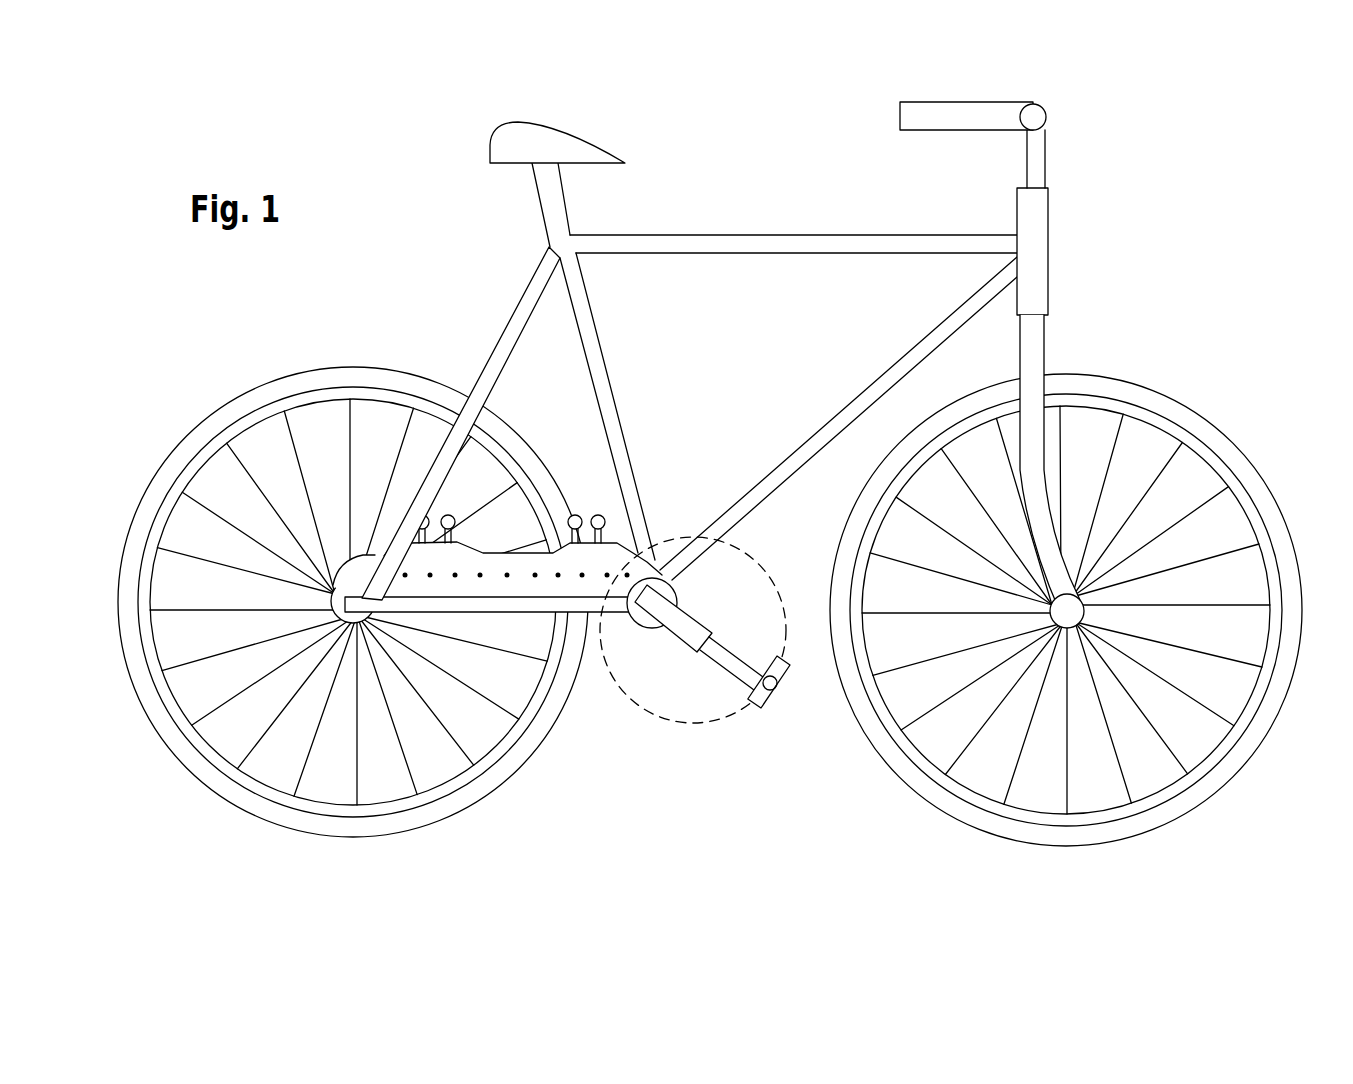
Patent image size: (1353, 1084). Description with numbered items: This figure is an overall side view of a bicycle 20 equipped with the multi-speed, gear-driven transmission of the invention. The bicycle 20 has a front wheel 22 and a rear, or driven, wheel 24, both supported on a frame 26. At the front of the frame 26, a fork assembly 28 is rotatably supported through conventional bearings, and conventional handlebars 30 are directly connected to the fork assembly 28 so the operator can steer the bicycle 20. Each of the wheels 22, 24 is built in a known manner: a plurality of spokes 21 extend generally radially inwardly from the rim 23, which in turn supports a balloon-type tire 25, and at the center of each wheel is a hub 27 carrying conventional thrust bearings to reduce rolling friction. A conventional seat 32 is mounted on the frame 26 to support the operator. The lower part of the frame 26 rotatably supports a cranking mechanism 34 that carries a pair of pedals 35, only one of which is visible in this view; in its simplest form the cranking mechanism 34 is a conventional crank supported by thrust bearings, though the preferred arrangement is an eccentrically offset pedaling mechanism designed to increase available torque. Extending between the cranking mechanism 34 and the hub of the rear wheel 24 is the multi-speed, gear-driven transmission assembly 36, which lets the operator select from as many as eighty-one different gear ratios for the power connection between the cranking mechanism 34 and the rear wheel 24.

The bicycle 20 is at (766, 243).
The spokes 21 is at (255, 748).
The front wheel 22 is at (1175, 428).
The rim 23 is at (310, 808).
The rear wheel 24 is at (265, 397).
The balloon-type tire 25 is at (366, 834).
The frame 26 is at (510, 337).
The hub 27 is at (1080, 625).
The fork assembly 28 is at (1033, 337).
The handlebars 30 is at (968, 108).
The seat 32 is at (550, 145).
The cranking mechanism 34 is at (738, 668).
The pedals 35 is at (762, 712).
The transmission assembly 36 is at (528, 582).